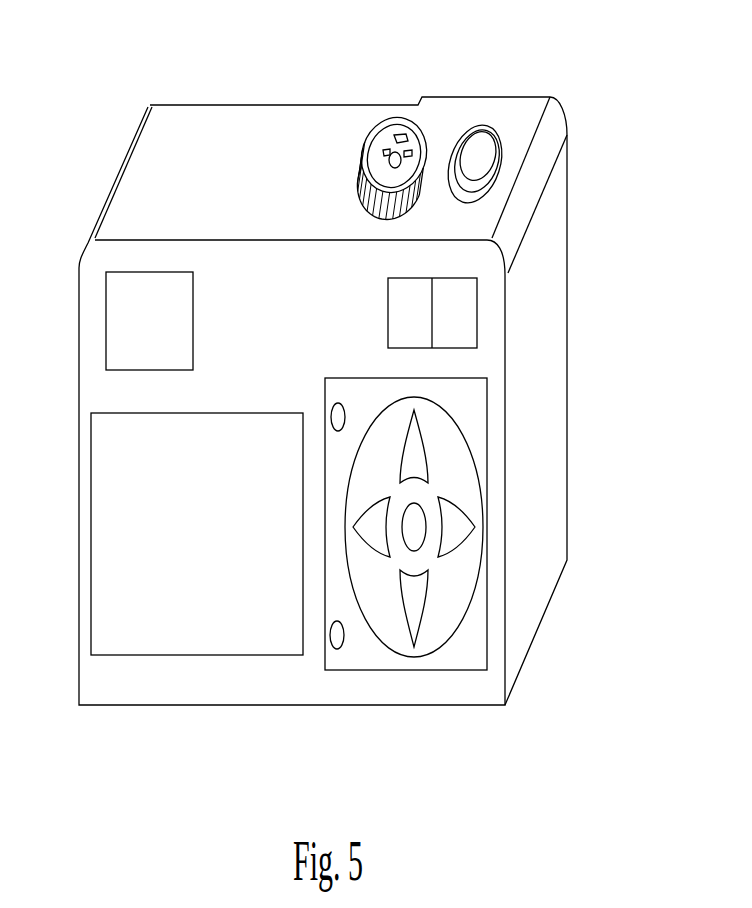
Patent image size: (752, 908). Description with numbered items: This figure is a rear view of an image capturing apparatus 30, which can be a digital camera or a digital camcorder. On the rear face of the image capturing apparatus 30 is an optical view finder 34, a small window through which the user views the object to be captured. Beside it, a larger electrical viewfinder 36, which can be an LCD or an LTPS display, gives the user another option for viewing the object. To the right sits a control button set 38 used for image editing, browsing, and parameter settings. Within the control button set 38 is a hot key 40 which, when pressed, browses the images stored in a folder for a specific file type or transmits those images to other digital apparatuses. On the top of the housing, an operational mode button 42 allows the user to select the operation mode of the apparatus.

The image capturing apparatus 30 is at (566, 402).
The optical view finder 34 is at (104, 320).
The electrical viewfinder 36 is at (168, 656).
The control button set 38 is at (440, 672).
The hot key 40 is at (337, 403).
The operational mode button 42 is at (382, 126).